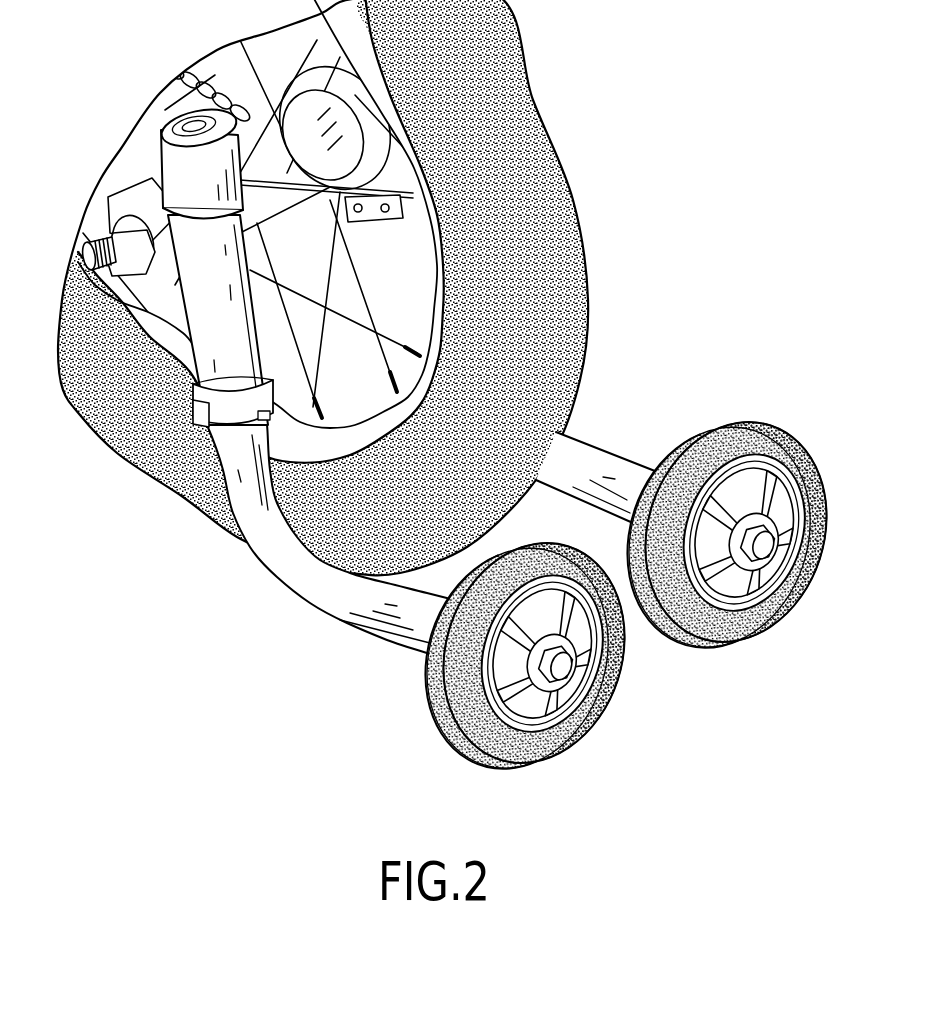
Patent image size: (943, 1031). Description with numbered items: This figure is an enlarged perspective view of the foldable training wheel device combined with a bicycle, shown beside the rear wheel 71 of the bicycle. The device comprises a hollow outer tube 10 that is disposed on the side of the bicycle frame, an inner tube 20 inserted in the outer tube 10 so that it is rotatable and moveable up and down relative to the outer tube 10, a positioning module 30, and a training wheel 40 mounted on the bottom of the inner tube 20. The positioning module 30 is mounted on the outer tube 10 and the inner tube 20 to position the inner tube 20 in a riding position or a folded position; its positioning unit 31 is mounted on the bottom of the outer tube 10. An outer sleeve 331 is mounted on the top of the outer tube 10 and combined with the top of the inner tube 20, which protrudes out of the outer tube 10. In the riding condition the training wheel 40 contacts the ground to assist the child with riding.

The rear wheel 71 is at (515, 150).
The outer tube 10 is at (213, 260).
The outer sleeve 331 is at (170, 138).
The positioning module 30 is at (177, 406).
The positioning unit 31 is at (186, 428).
The inner tube 20 is at (272, 567).
The training wheel 40 is at (462, 704).